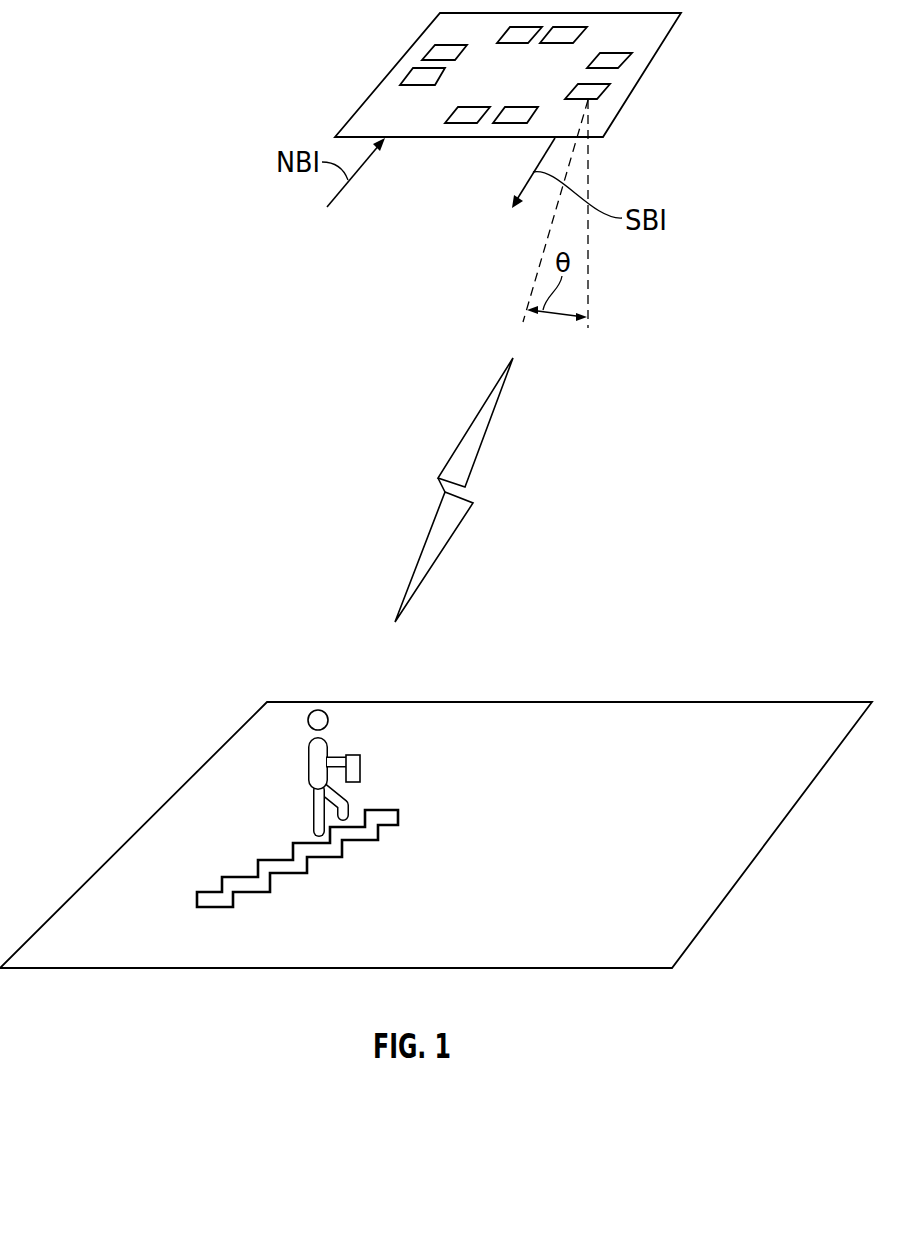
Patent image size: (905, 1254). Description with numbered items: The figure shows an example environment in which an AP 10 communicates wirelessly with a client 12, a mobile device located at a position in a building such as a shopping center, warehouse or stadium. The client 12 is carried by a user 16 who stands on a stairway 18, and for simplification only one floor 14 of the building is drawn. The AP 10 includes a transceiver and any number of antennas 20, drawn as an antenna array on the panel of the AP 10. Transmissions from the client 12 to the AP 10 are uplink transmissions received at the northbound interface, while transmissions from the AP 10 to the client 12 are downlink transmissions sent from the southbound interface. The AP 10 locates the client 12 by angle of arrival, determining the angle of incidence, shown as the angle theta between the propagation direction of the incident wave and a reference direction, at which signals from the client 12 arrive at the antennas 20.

The AP 10 is at (388, 72).
The antennas 20 is at (630, 60).
The client 12 is at (360, 768).
The floor 14 is at (631, 781).
The user 16 is at (307, 758).
The stairway 18 is at (308, 865).